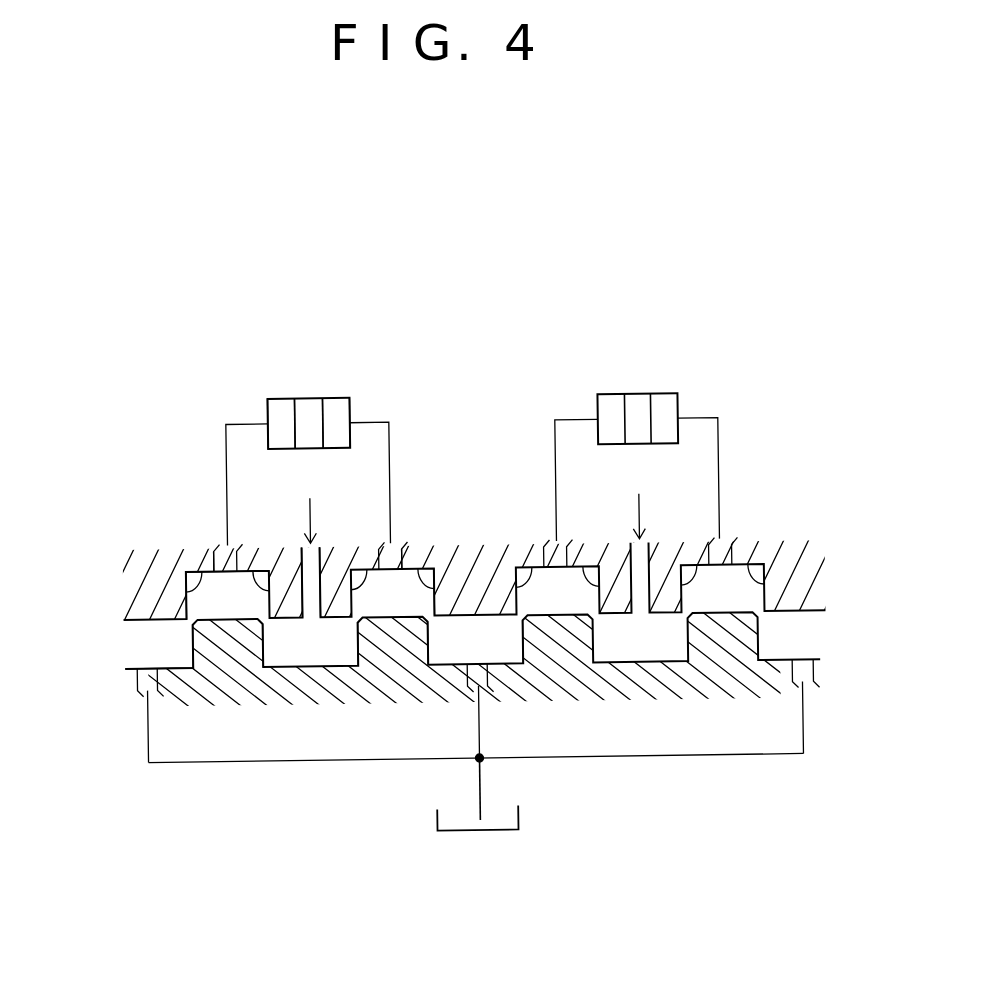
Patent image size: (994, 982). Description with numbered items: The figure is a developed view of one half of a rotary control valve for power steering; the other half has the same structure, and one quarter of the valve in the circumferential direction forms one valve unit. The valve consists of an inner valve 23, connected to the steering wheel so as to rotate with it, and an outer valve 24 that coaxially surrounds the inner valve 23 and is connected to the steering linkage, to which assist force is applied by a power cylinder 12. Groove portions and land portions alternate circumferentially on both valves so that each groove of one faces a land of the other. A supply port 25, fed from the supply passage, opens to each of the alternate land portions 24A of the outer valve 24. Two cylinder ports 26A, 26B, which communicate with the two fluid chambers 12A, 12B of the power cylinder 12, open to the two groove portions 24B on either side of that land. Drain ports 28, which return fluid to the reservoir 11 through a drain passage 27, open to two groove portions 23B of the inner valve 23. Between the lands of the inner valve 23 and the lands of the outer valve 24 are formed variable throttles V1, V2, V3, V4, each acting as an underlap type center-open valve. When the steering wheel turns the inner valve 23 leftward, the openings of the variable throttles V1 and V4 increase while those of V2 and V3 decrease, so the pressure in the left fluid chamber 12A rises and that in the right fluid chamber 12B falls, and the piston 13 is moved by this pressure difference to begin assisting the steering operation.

The reservoir 11 is at (495, 830).
The power cylinder 12 is at (314, 383).
The left fluid chamber 12A is at (278, 409).
The right fluid chamber 12B is at (345, 412).
The piston 13 is at (317, 400).
The inner valve 23 is at (780, 665).
The groove portions of the inner valve 23B is at (167, 663).
The outer valve 24 is at (795, 615).
The land portions of the outer valve 24A is at (260, 548).
The groove portions of the outer valve 24B is at (185, 585).
The supply port 25 is at (342, 557).
The cylinder port 26A is at (222, 554).
The cylinder port 26B is at (404, 551).
The drain passage 27 is at (479, 786).
The drain ports 28 is at (138, 685).
The variable throttle V1 is at (277, 669).
The variable throttle V2 is at (346, 670).
The variable throttle V3 is at (183, 668).
The variable throttle V4 is at (436, 671).